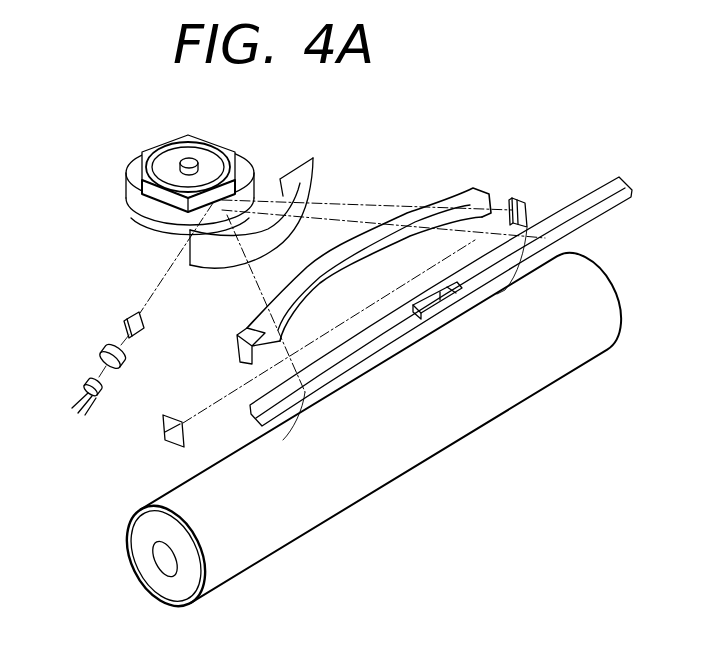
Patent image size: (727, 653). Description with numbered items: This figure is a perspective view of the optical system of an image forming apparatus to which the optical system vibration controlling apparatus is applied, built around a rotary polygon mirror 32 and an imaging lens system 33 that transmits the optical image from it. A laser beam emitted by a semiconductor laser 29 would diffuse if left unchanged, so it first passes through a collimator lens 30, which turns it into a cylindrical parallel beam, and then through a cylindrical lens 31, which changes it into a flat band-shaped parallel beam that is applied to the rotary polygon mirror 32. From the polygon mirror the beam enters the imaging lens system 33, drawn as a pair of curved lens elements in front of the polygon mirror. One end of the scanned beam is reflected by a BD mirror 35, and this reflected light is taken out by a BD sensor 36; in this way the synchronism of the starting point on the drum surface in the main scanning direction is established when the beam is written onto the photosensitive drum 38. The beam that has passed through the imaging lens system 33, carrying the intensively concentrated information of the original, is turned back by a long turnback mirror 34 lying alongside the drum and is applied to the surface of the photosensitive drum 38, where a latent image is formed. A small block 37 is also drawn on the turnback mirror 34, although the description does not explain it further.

The semiconductor laser 29 is at (80, 383).
The collimator lens 30 is at (99, 349).
The cylindrical lens 31 is at (131, 317).
The rotary polygon mirror 32 is at (168, 157).
The imaging lens system 33 is at (428, 198).
The turnback mirror 34 is at (634, 174).
The BD mirror 35 is at (517, 196).
The BD sensor 36 is at (165, 438).
The beam detect sensor block 37 is at (455, 298).
The photosensitive drum 38 is at (430, 435).